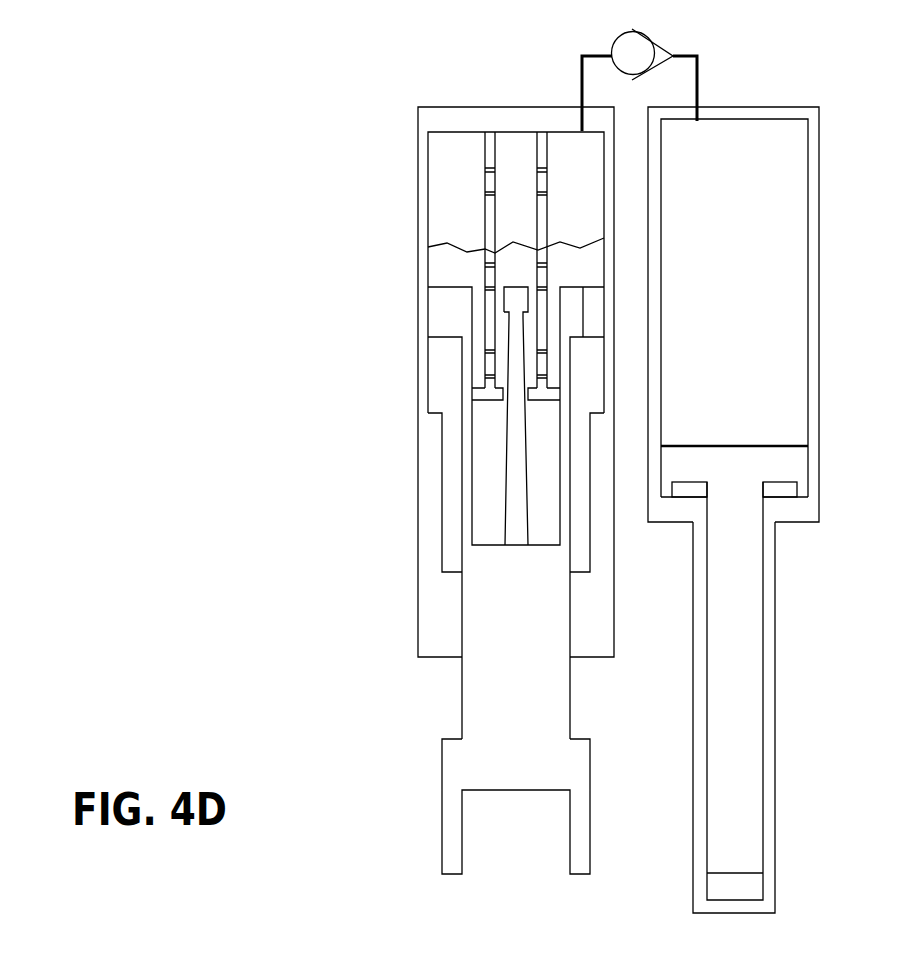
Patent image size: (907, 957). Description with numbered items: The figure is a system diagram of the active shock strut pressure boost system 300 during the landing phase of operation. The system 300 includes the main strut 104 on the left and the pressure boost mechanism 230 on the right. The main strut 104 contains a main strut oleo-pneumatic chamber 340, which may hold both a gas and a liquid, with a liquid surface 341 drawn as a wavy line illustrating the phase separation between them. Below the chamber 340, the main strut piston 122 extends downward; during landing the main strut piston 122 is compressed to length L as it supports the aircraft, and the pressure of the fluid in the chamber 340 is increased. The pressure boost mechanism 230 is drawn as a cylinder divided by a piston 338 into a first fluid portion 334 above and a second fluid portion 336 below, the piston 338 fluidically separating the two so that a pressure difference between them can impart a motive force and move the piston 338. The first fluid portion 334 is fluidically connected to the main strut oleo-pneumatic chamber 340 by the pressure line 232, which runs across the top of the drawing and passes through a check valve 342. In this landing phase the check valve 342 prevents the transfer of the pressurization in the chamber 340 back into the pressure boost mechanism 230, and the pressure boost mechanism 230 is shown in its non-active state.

The pneumatic and hydraulic system 300 is at (312, 134).
The main strut 104 is at (386, 277).
The main strut oleo-pneumatic chamber 340 is at (448, 172).
The liquid surface 341 is at (440, 227).
The main strut piston 122 is at (440, 753).
The compressed length L is at (436, 702).
The pressure line 232 is at (700, 88).
The check valve 342 is at (618, 40).
The pressure boost mechanism 230 is at (818, 272).
The first fluid portion 334 is at (766, 195).
The piston 338 is at (707, 445).
The second fluid portion 336 is at (781, 495).